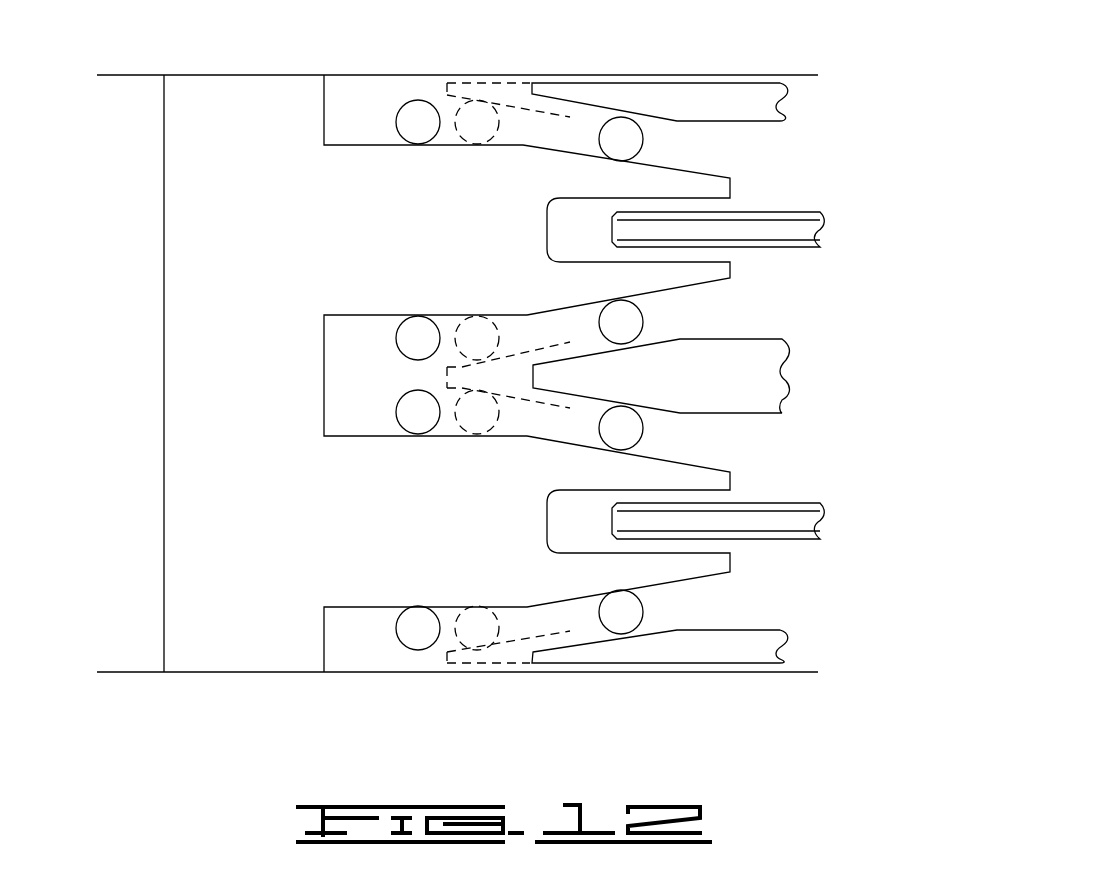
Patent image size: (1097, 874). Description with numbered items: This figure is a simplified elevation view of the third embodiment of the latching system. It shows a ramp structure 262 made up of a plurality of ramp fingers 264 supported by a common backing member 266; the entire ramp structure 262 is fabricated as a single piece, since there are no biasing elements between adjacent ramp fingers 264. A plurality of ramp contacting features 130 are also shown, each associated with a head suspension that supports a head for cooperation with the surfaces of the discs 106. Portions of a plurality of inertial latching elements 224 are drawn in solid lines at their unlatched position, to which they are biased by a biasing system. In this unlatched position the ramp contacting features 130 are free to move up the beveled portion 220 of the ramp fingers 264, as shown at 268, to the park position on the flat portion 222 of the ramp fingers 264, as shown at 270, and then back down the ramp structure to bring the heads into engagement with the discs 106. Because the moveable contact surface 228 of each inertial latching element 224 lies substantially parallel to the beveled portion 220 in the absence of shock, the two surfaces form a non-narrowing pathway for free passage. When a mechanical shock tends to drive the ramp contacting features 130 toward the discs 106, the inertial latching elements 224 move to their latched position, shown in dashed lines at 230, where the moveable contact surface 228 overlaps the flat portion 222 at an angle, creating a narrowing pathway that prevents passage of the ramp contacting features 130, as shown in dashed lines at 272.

The discs 106 is at (762, 232).
The ramp contacting features 130 is at (418, 110).
The beveled portion 220 is at (668, 583).
The flat portion 222 is at (355, 315).
The inertial latching elements 224 is at (730, 372).
The moveable contact surface 228 is at (597, 107).
The latched position 230 is at (465, 90).
The ramp structure 262 is at (143, 252).
The ramp fingers 264 is at (452, 515).
The backing member 266 is at (242, 110).
The ramp contacting feature moving up the beveled portion 268 is at (627, 617).
The park position on the flat portion 270 is at (415, 635).
The blocked ramp contacting feature 272 is at (472, 637).